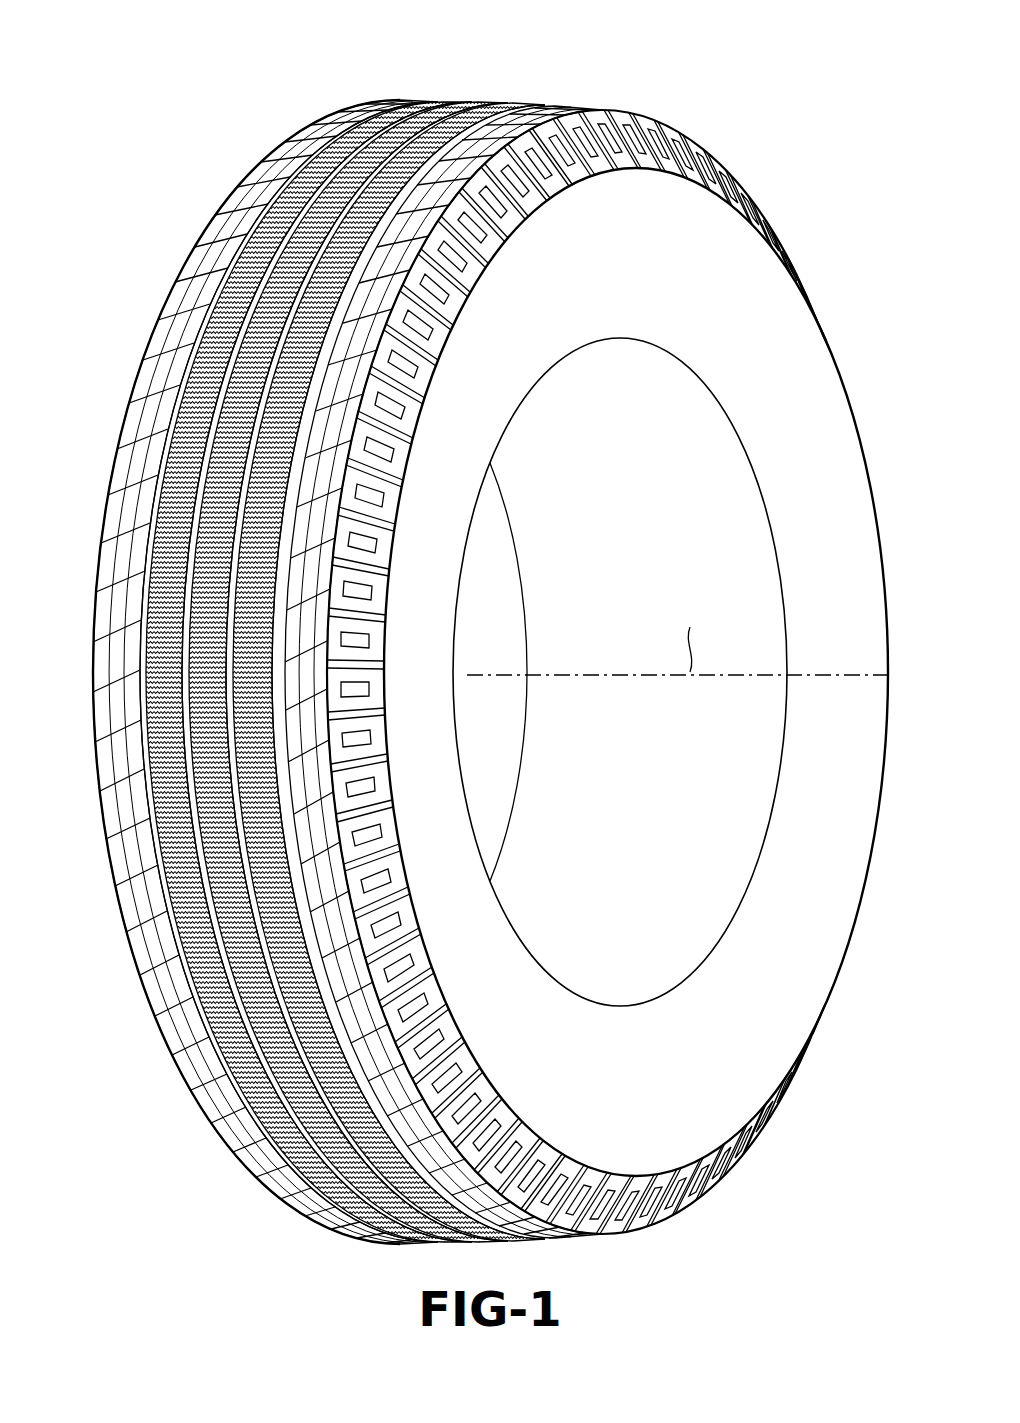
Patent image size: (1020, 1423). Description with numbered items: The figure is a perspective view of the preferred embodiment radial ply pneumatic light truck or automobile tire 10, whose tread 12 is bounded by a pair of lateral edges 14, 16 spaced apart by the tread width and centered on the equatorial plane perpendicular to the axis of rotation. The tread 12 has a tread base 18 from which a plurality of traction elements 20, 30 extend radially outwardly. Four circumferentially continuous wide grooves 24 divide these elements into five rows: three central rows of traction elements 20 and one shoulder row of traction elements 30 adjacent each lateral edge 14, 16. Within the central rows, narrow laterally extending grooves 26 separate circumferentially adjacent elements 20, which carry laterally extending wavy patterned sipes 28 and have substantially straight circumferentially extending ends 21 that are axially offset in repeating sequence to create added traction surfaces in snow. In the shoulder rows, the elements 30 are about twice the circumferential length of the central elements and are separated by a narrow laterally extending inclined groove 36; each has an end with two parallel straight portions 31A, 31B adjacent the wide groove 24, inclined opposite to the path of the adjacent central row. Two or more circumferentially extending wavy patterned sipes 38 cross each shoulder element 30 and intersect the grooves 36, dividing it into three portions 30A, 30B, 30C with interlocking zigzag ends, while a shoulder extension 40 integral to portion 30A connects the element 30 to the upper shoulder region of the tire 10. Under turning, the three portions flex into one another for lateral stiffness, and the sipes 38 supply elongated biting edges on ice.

The tire 10 is at (792, 416).
The tread 12 is at (325, 624).
The lateral edge 14 is at (572, 122).
The lateral edge 16 is at (303, 148).
The tread base 18 is at (602, 672).
The traction elements of the central rows 20 is at (276, 400).
The circumferentially extending ends 21 is at (293, 1132).
The circumferentially continuous wide grooves 24 is at (380, 1173).
The narrow laterally extending grooves 26 is at (168, 856).
The laterally extending wavy patterned sipes 28 is at (213, 992).
The shoulder row traction elements 30 is at (325, 672).
The portion of traction element 30A is at (392, 1020).
The portion of traction element 30B is at (382, 1046).
The portion of traction element 30C is at (370, 1062).
The straight portion of end 31A is at (335, 358).
The straight portion of end 31B is at (330, 388).
The narrow laterally extending inclined groove 36 is at (243, 672).
The circumferentially extending wavy patterned sipes 38 is at (193, 1067).
The shoulder extension 40 is at (395, 983).